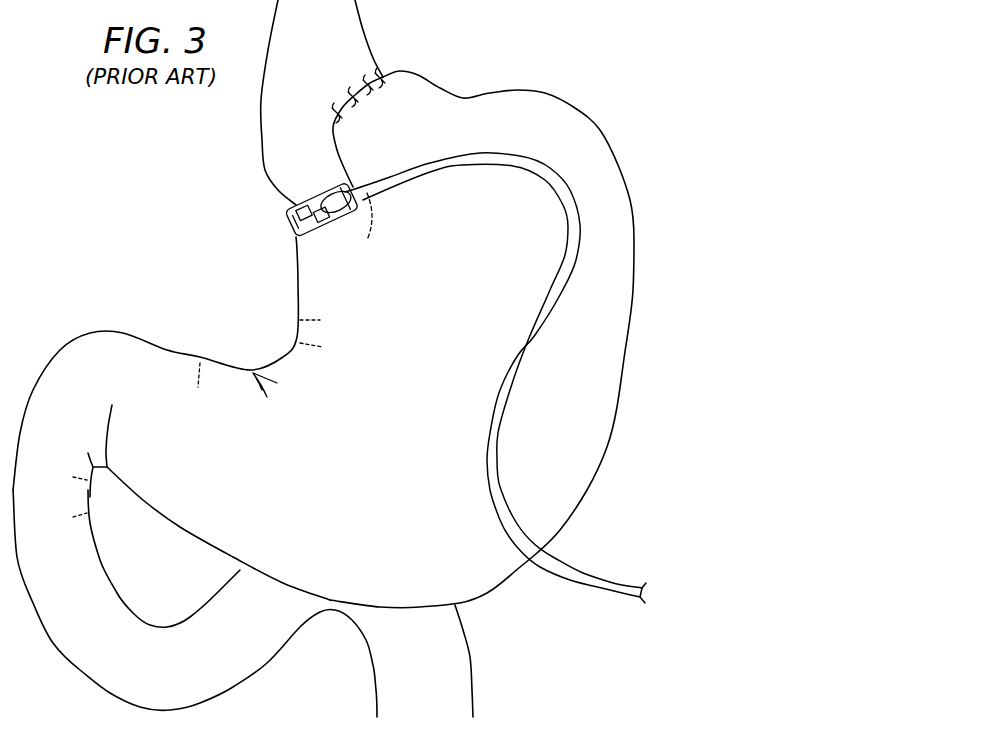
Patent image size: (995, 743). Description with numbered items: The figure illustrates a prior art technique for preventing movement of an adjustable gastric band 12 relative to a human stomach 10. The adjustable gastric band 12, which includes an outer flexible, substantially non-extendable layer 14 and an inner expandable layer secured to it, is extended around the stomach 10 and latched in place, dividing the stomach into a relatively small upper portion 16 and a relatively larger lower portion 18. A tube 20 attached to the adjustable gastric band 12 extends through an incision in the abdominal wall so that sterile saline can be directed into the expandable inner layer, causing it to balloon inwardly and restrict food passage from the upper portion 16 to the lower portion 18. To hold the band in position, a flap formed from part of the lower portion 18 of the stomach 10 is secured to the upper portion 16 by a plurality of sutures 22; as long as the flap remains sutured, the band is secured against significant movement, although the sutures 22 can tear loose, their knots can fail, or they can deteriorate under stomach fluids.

The stomach 10 is at (496, 557).
The adjustable gastric band 12 is at (284, 220).
The outer flexible, substantially non-extendable layer 14 is at (340, 190).
The upper portion 16 is at (262, 142).
The lower portion 18 is at (437, 352).
The tube 20 is at (485, 454).
The sutures 22 is at (347, 90).